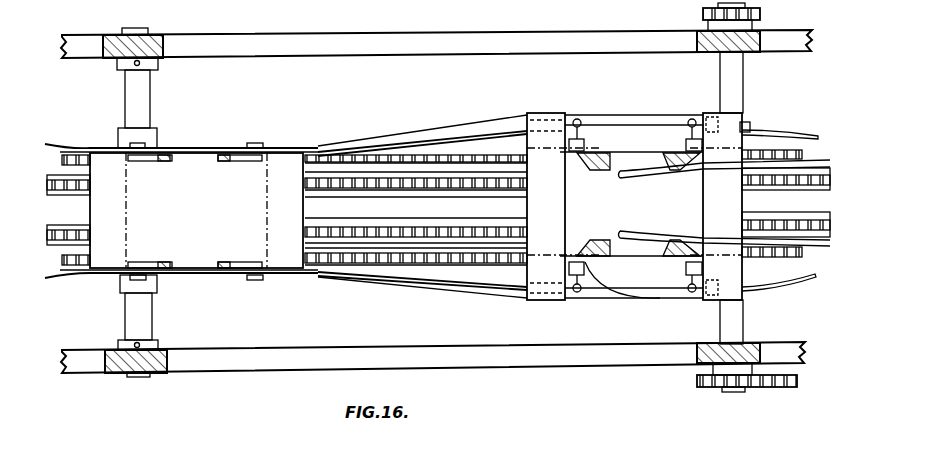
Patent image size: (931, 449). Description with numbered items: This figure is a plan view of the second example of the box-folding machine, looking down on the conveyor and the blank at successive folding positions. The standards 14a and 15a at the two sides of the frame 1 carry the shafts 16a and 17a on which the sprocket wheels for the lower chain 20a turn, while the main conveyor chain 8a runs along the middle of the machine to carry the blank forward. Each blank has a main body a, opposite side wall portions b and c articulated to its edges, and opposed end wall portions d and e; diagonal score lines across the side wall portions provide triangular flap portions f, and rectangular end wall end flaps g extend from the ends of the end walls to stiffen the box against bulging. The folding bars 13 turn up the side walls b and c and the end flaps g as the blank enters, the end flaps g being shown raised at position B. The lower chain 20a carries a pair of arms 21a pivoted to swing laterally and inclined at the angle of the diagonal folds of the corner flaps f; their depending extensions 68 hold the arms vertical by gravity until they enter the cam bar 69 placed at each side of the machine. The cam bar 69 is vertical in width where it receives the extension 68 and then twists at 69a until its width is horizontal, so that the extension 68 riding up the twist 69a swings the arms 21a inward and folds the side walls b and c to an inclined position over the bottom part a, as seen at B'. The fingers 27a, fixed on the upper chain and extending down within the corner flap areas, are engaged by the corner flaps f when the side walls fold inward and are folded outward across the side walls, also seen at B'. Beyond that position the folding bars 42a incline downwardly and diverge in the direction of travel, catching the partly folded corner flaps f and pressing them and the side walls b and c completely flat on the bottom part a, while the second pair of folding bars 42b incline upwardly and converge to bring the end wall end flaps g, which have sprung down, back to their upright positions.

The rail 1 is at (362, 34).
The standard 14a is at (160, 35).
The standard 15a is at (696, 30).
The shaft 16a is at (148, 104).
The shaft 17a is at (746, 86).
The folding bar 13 is at (88, 145).
The position B is at (196, 210).
The position B' is at (634, 206).
The finger 27a is at (142, 162).
The arm 21a is at (145, 144).
The depending extension 68 is at (577, 118).
The main conveyor chain 8a is at (404, 226).
The folding bar 42a is at (686, 230).
The folding bar 42b is at (773, 130).
The twist 69a is at (443, 130).
The cam bar 69 is at (338, 148).
The lower chain 20a is at (379, 150).
The main body a is at (415, 208).
The side wall portion b is at (420, 137).
The side wall portion c is at (632, 258).
The end wall portion d is at (502, 209).
The end wall portion e is at (325, 212).
The triangular flap portion f is at (108, 176).
The end wall end flap g is at (276, 155).